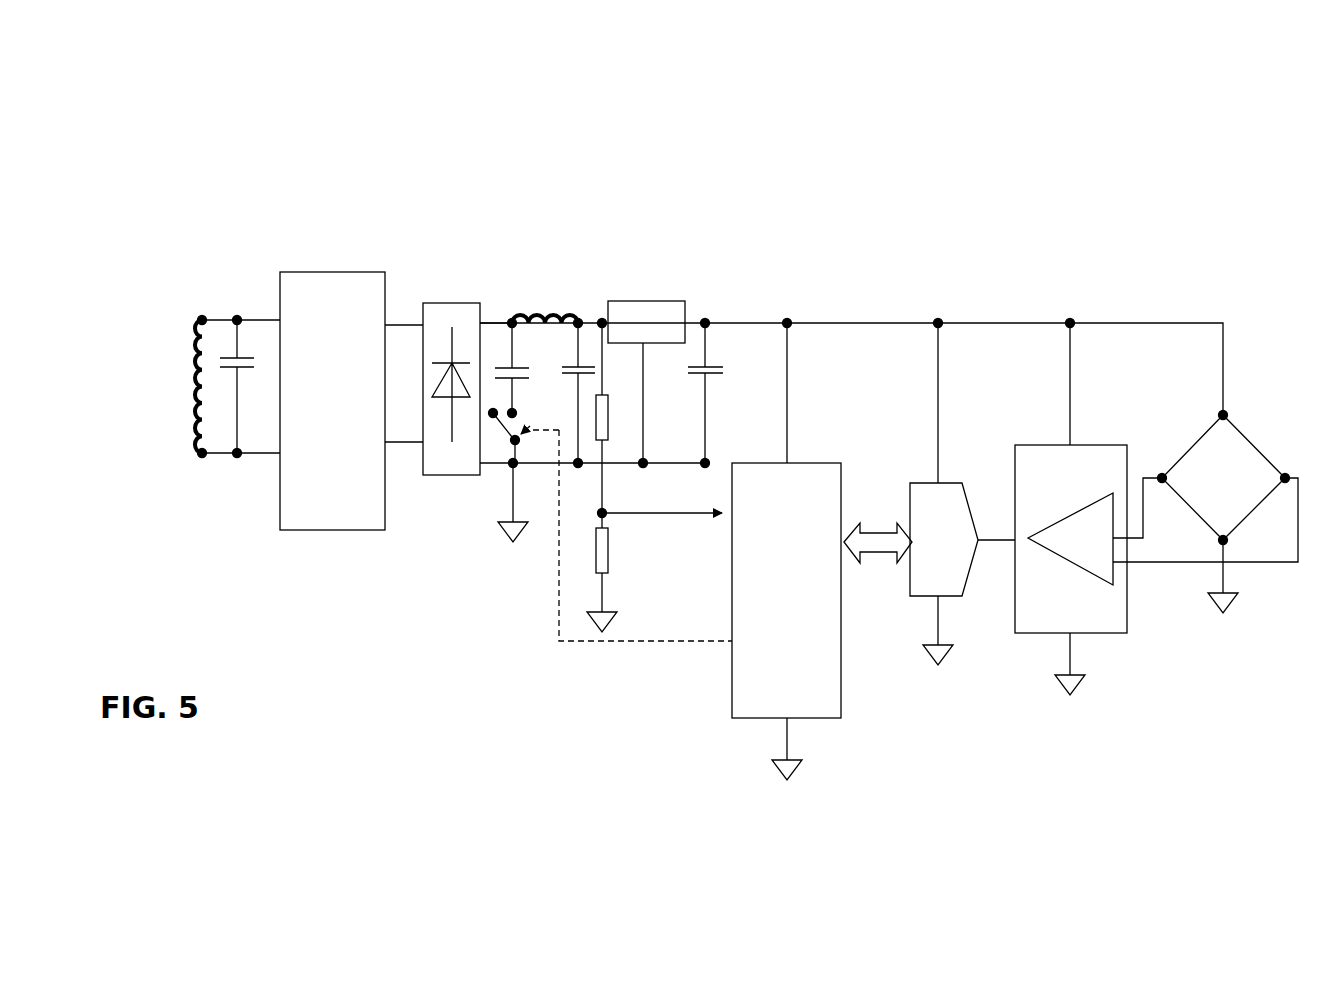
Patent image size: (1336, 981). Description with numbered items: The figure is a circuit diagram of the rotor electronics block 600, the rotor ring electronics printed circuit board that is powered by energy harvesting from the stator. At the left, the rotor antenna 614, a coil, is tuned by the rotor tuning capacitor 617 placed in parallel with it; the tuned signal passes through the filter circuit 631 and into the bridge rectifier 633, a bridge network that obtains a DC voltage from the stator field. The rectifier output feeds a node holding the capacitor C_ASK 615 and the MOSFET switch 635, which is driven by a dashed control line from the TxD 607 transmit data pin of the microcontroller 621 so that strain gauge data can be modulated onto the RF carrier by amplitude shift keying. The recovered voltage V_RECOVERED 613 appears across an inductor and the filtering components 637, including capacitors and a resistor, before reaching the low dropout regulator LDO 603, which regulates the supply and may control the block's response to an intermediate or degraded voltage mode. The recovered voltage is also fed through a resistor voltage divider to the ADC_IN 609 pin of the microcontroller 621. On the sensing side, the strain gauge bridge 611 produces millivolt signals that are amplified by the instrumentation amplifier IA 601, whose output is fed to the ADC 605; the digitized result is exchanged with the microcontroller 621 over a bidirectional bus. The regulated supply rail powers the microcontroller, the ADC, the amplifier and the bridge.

The rotor electronics block 600 is at (293, 150).
The rotor antenna 614 is at (189, 416).
The rotor tuning capacitor 617 is at (222, 378).
The filter circuit 631 is at (351, 401).
The bridge rectifier 633 is at (423, 480).
The C_ASK 615 is at (498, 355).
The MOSFET switch 635 is at (494, 449).
The recovered voltage V_RECOVERED 613 is at (588, 314).
The filtering components 637 is at (552, 303).
The low dropout regulator 603 is at (680, 297).
The microcontroller 621 is at (822, 550).
The ADC_IN 609 is at (689, 558).
The TxD 607 is at (663, 552).
The ADC 605 is at (962, 492).
The instrumentation amplifier 601 is at (1156, 507).
The strain gauge bridge 611 is at (1262, 443).